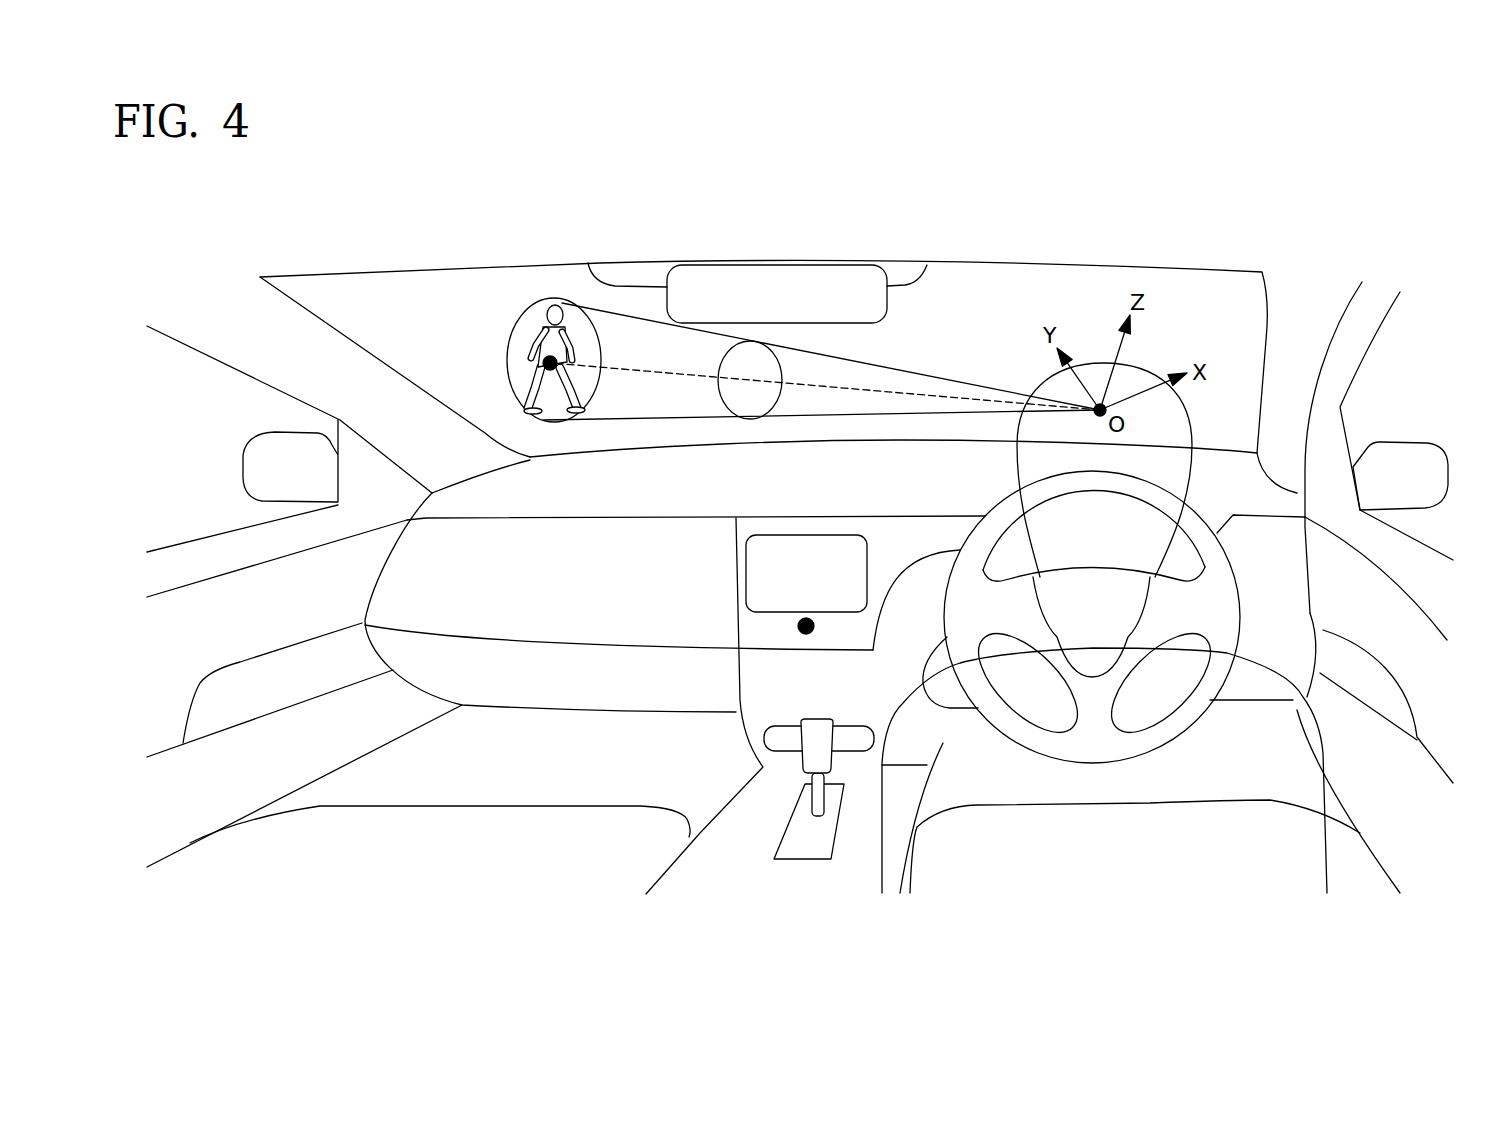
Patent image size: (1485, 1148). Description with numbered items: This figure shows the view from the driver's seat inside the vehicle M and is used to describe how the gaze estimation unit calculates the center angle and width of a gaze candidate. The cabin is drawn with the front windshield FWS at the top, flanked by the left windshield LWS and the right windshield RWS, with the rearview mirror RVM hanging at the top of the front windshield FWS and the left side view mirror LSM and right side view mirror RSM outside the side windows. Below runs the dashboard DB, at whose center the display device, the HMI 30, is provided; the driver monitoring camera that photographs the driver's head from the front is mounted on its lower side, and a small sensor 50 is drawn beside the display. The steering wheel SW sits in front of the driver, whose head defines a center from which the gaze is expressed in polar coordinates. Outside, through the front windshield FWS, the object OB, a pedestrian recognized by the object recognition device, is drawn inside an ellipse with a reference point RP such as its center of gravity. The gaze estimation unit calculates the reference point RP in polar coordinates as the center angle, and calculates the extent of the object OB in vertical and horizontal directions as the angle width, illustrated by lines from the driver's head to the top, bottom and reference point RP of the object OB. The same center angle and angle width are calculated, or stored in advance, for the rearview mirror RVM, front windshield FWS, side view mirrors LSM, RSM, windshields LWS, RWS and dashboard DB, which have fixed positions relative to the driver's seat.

The vehicle M is at (349, 253).
The object OB is at (553, 298).
The rearview mirror RVM is at (775, 277).
The front windshield FWS is at (1070, 278).
The right windshield RWS is at (1400, 347).
The left windshield LWS is at (197, 380).
The reference point RP is at (543, 357).
The left side view mirror LSM is at (255, 470).
The right side view mirror RSM is at (1410, 452).
The dashboard DB is at (553, 509).
The HMI 30 is at (746, 574).
The camera 50 is at (796, 626).
The steering wheel SW is at (1223, 593).